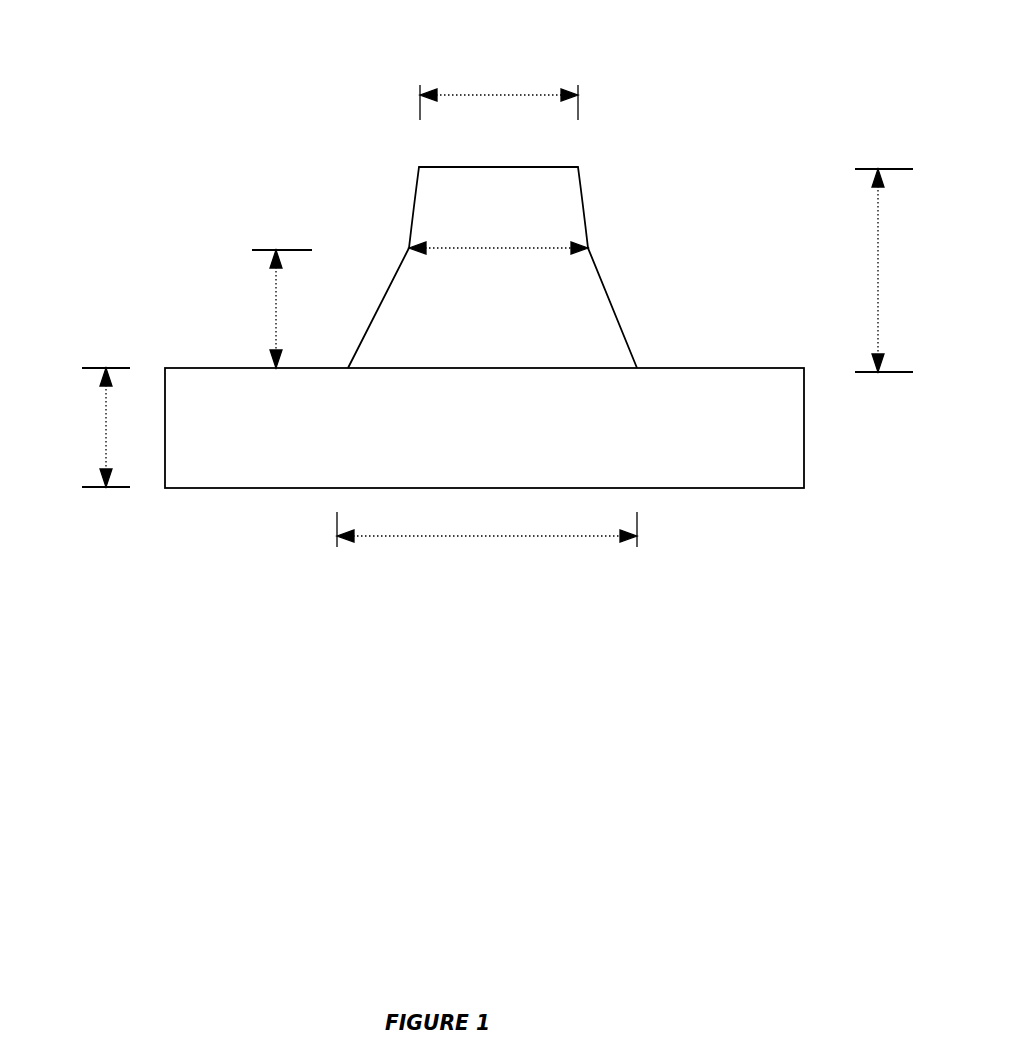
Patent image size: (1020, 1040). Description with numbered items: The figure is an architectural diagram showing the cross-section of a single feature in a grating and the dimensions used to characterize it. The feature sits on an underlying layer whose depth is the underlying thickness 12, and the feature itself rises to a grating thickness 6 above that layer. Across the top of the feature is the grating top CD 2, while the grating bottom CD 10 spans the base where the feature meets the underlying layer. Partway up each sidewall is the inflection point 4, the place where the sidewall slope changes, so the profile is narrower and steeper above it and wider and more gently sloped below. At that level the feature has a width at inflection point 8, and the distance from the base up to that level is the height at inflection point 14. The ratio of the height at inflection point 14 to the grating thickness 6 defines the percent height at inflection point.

The grating top CD 2 is at (505, 95).
The inflection point 4 is at (596, 240).
The grating thickness 6 is at (878, 312).
The width at inflection point 8 is at (510, 248).
The grating bottom CD 10 is at (465, 536).
The underlying thickness 12 is at (105, 428).
The height at inflection point 14 is at (275, 297).